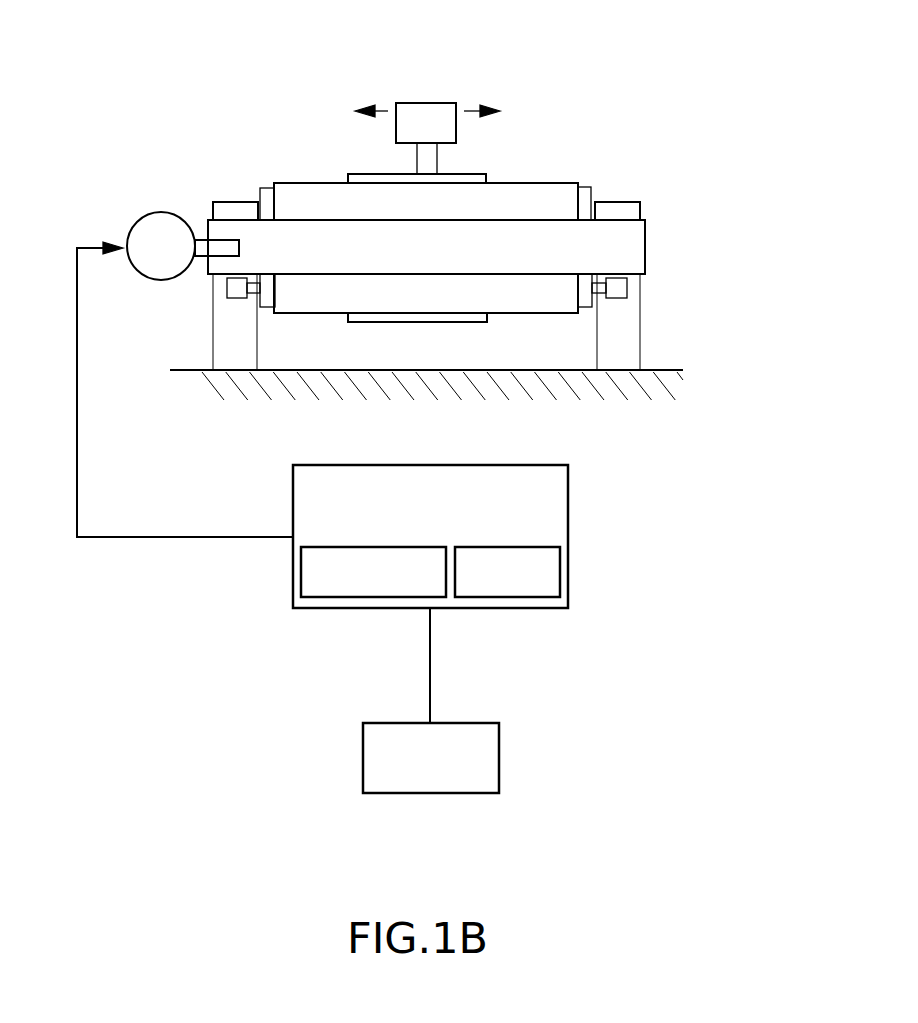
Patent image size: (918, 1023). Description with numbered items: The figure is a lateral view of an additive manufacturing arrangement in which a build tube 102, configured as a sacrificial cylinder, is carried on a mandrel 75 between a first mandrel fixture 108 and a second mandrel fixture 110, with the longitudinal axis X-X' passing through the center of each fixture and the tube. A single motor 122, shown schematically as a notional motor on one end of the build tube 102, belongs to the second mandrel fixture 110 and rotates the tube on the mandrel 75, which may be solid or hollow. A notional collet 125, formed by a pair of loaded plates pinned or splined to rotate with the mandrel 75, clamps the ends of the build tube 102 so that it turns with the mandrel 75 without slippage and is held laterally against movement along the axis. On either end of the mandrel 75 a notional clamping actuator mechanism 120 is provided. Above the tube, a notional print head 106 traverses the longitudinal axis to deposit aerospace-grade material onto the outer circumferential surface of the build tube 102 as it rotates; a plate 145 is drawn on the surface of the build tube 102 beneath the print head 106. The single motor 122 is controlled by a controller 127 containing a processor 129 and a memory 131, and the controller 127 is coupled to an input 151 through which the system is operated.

The mandrel 75 is at (638, 241).
The build tube 102 is at (293, 183).
The print-head 106 is at (422, 103).
The first mandrel fixture 108 is at (640, 325).
The second mandrel fixture 110 is at (213, 342).
The clamping actuator mechanism 120 is at (238, 298).
The single motor 122 is at (154, 212).
The collet 125 is at (586, 187).
The controller 127 is at (446, 530).
The processor 129 is at (372, 600).
The memory 131 is at (503, 600).
The plate 145 is at (318, 183).
The input 151 is at (448, 782).